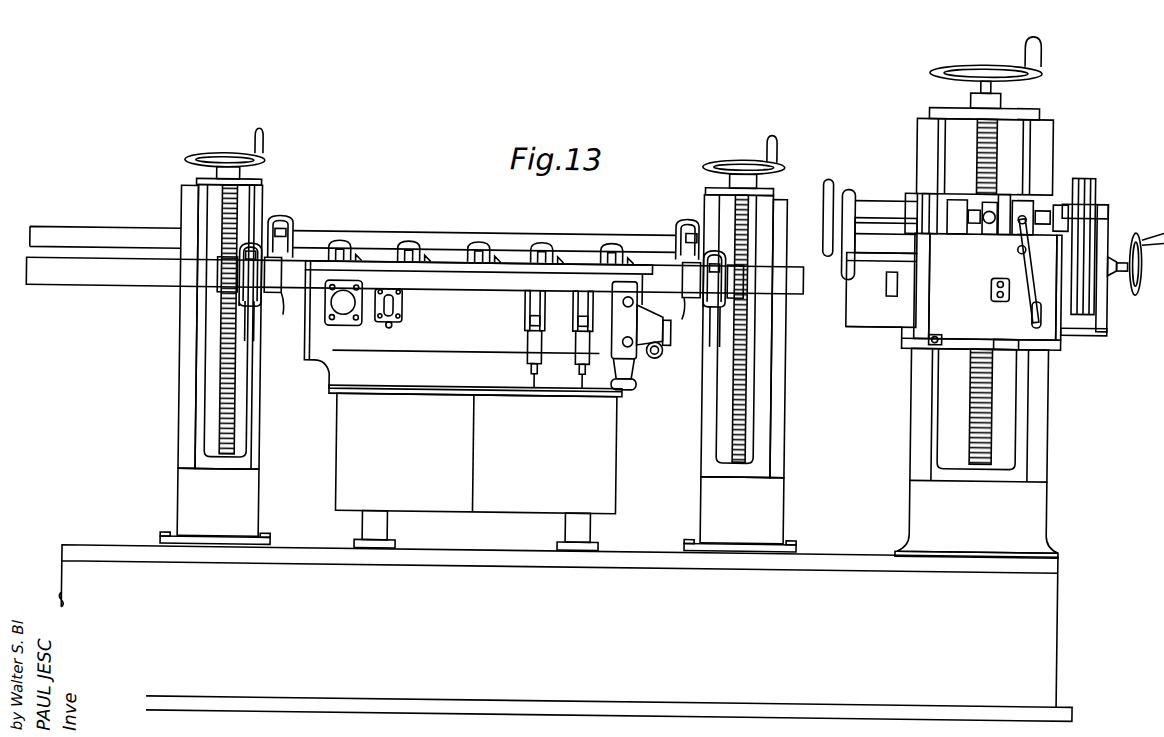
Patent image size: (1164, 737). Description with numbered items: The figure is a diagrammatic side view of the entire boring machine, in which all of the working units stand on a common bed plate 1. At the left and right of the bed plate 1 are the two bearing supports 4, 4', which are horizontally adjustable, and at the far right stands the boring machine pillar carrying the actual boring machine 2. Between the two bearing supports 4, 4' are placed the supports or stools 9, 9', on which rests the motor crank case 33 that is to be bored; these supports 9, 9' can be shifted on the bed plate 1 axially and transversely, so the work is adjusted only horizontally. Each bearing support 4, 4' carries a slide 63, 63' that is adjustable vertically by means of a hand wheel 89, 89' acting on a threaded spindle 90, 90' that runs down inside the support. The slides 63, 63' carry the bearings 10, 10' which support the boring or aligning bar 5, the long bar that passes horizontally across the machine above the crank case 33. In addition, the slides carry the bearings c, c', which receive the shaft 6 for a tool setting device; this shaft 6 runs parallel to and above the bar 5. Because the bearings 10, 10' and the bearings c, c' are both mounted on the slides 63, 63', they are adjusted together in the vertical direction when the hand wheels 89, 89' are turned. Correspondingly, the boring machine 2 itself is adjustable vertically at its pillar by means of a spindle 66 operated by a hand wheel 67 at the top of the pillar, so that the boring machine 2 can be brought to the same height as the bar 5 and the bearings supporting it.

The bed plate 1 is at (566, 633).
The boring machine 2 is at (950, 293).
The bearing support 4 is at (206, 506).
The bearing support 4' is at (749, 515).
The boring or aligning bar 5 is at (76, 281).
The shaft 6 is at (43, 244).
The support or stool 9 is at (382, 529).
The support or stool 9' is at (594, 532).
The bearing 10 is at (275, 319).
The bearing 10' is at (691, 335).
The motor crank case 33 is at (345, 458).
The slide 63 is at (202, 323).
The slide 63' is at (767, 333).
The spindle 66 is at (985, 414).
The hand wheel 67 is at (932, 69).
The hand wheel 89 is at (225, 147).
The hand wheel 89' is at (744, 155).
The spindle 90 is at (185, 319).
The spindle 90' is at (779, 329).
The bearing c is at (266, 252).
The bearing c' is at (706, 251).